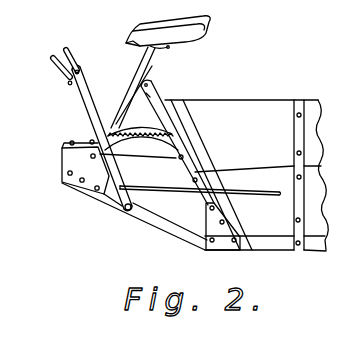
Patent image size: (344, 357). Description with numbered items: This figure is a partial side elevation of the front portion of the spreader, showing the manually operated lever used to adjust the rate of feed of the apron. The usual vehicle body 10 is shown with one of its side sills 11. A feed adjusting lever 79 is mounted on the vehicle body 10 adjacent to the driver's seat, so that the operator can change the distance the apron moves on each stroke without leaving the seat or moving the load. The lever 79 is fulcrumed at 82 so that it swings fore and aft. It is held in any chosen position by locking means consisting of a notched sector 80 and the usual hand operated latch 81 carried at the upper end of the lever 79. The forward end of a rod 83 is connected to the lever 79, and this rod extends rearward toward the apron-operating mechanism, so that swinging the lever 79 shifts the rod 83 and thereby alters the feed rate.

The vehicle body 10 is at (262, 89).
The side sills 11 is at (314, 252).
The feed adjusting lever 79 is at (86, 109).
The notched sector 80 is at (146, 117).
The hand operated latch 81 is at (63, 73).
The fulcrum 82 is at (124, 211).
The rod 83 is at (270, 191).